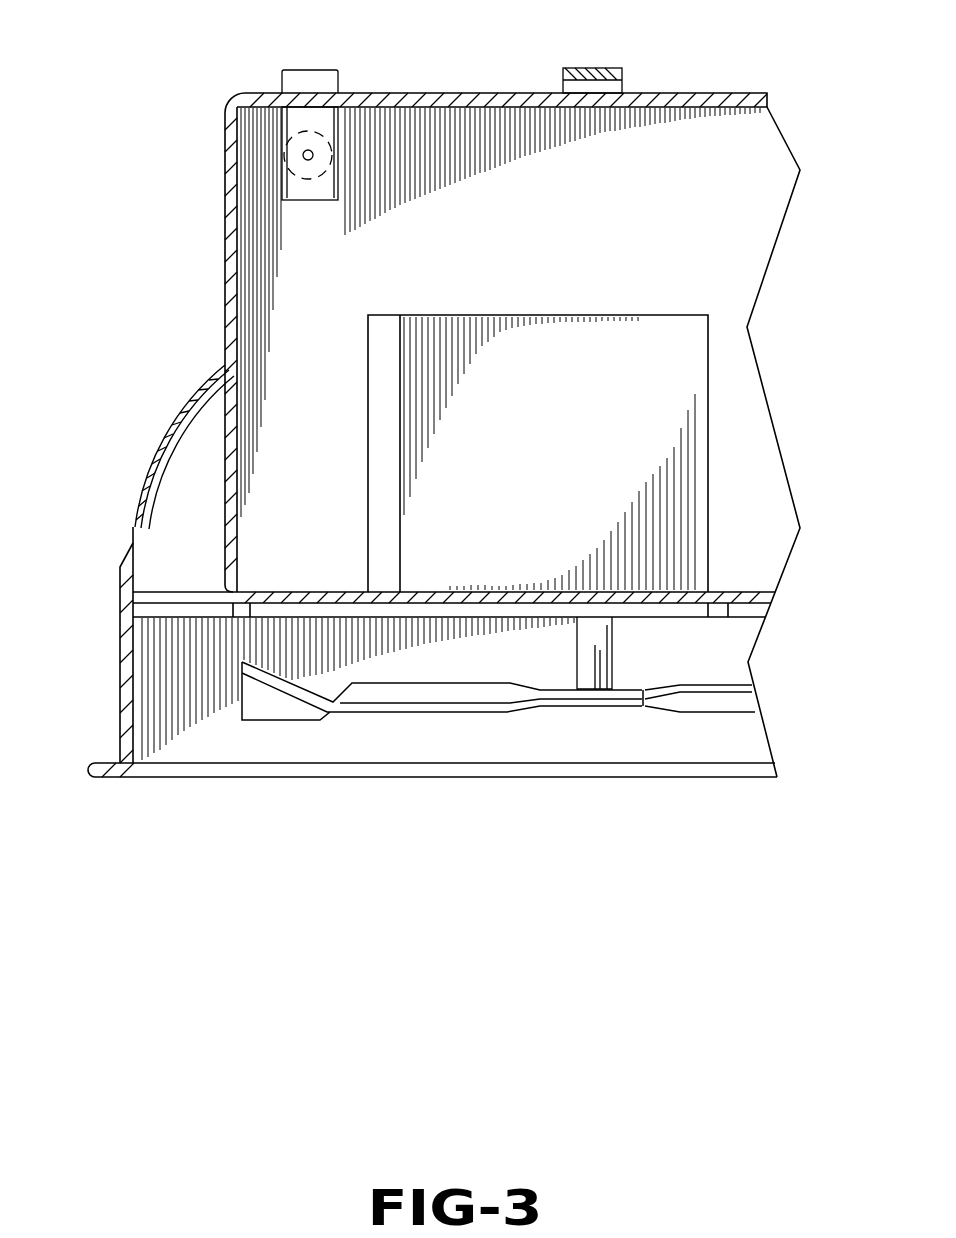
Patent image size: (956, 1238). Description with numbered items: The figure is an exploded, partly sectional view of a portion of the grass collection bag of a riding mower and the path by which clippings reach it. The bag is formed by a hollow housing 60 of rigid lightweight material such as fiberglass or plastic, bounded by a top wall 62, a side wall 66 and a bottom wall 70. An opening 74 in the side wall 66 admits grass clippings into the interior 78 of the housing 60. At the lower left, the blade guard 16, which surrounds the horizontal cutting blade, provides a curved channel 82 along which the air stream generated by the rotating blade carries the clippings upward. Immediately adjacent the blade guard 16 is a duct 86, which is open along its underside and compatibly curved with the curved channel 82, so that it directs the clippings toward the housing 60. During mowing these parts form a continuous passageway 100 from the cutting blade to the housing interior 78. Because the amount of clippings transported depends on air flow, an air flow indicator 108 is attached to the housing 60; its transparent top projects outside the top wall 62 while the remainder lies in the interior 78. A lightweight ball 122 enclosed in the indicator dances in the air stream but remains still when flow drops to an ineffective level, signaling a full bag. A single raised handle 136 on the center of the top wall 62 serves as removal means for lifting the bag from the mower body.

The blade guard 16 is at (125, 740).
The hollow housing 60 is at (762, 432).
The top wall 62 is at (420, 97).
The side wall 66 is at (230, 128).
The bottom wall 70 is at (733, 590).
The opening 74 is at (392, 337).
The interior 78 is at (300, 555).
The curved channel 82 is at (182, 608).
The duct 86 is at (163, 438).
The continuous passageway 100 is at (187, 543).
The air flow indicator 108 is at (310, 70).
The lightweight ball 122 is at (310, 178).
The raised handle 136 is at (597, 72).